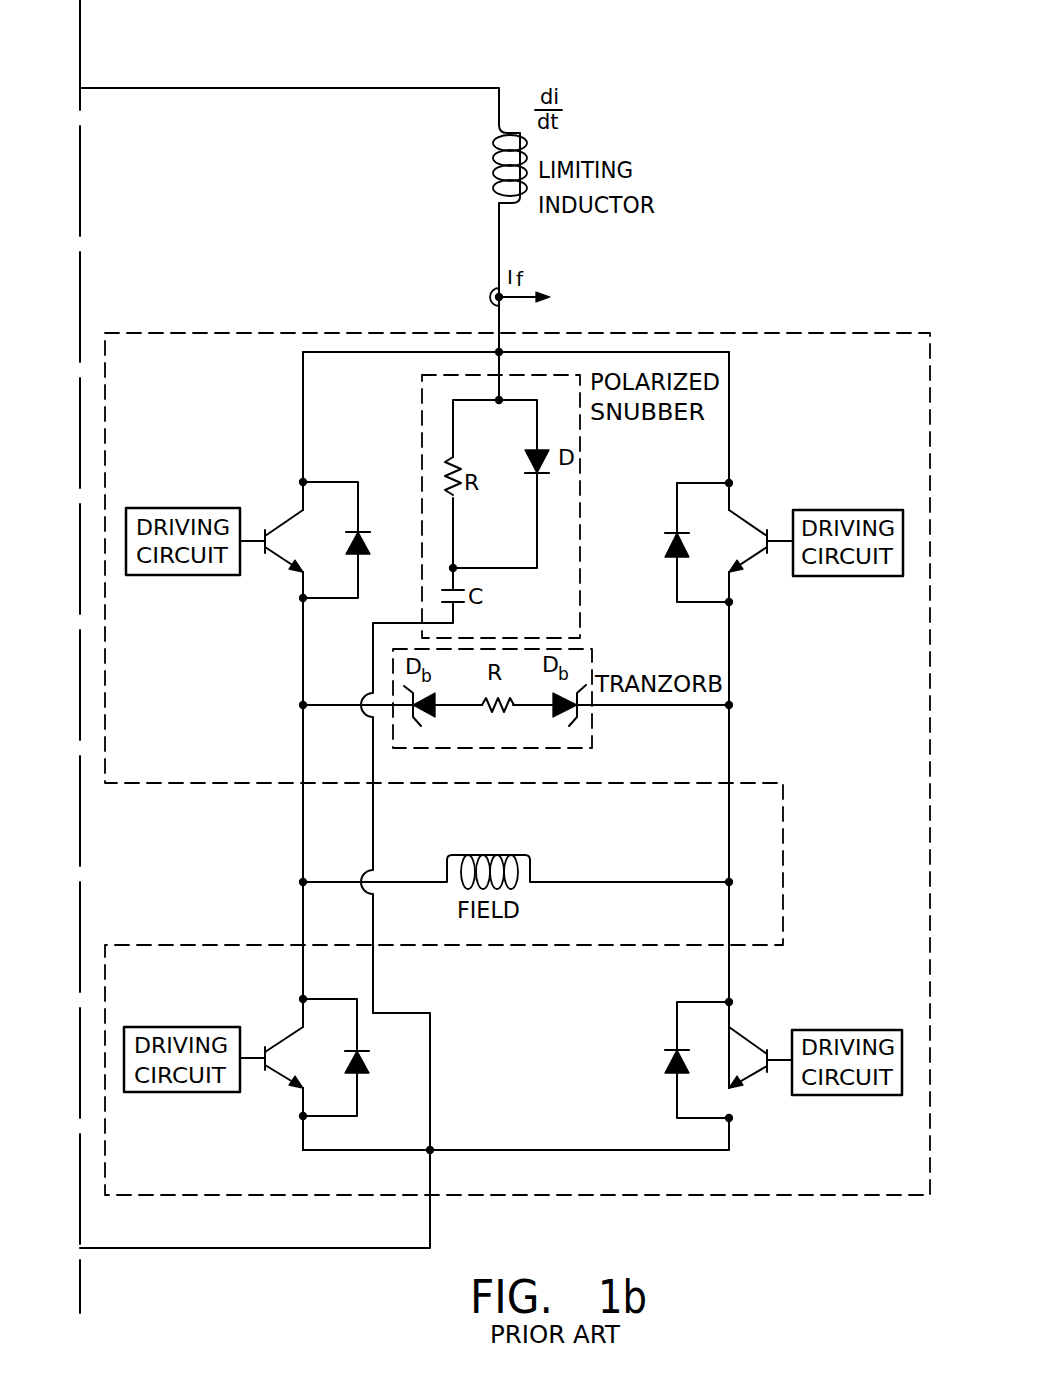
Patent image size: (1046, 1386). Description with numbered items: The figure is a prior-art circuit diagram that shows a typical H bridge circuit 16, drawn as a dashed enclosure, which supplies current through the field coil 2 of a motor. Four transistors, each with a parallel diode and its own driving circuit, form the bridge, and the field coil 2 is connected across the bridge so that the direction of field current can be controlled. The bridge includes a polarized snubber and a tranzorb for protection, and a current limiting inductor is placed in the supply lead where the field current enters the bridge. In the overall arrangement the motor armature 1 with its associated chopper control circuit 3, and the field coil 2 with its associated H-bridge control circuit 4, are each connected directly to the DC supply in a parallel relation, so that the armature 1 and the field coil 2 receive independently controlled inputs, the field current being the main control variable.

The H bridge circuit 16 is at (748, 333).
The motor armature 1 is at (317, 540).
The field coil 2 is at (716, 543).
The chopper control circuit 3 is at (316, 1058).
The H-bridge control circuit 4 is at (712, 1060).